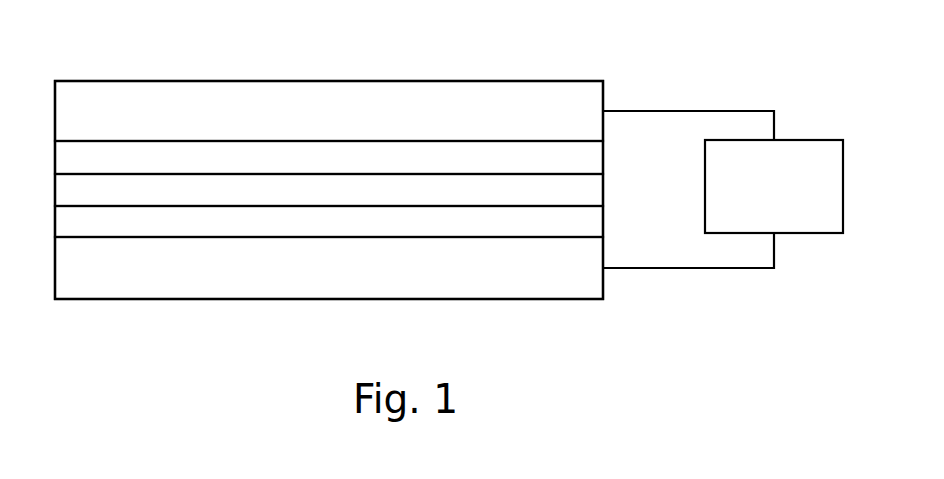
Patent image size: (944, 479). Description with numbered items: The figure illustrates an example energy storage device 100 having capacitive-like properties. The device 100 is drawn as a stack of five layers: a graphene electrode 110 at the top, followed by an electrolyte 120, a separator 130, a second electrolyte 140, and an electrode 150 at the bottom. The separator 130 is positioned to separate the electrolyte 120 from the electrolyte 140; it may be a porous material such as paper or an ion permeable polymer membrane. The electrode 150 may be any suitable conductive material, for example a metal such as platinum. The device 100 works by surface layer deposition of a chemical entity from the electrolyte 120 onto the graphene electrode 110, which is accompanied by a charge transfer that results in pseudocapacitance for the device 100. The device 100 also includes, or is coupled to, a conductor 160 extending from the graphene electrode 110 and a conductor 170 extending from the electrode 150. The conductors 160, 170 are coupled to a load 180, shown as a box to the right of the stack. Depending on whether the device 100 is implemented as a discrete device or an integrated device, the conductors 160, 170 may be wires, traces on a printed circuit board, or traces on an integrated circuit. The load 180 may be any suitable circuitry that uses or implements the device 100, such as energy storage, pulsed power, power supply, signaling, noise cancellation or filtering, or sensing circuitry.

The device 100 is at (134, 52).
The graphene electrode 110 is at (580, 118).
The electrolyte 120 is at (580, 166).
The separator 130 is at (580, 200).
The electrolyte 140 is at (580, 232).
The electrode 150 is at (580, 278).
The conductor 160 is at (697, 110).
The conductor 170 is at (690, 270).
The load 180 is at (835, 230).